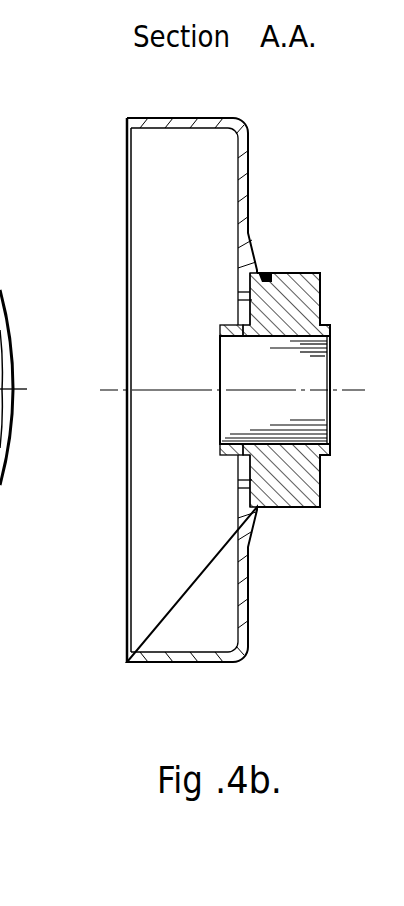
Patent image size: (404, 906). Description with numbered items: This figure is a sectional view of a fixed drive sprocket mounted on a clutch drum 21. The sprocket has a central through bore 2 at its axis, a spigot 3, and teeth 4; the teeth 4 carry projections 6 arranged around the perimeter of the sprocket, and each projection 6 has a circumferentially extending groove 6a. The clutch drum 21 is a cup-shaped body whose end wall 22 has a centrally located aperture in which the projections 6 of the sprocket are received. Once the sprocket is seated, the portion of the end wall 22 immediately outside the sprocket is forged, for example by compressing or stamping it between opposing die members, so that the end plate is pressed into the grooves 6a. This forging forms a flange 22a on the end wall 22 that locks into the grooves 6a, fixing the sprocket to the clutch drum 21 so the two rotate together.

The through bore 2 is at (278, 380).
The spigot 3 is at (222, 458).
The teeth 4 is at (283, 295).
The projections 6 is at (315, 267).
The circumferentially extending groove 6a is at (266, 273).
The clutch drum 21 is at (188, 170).
The end wall 22 is at (250, 197).
The flange 22a is at (237, 280).